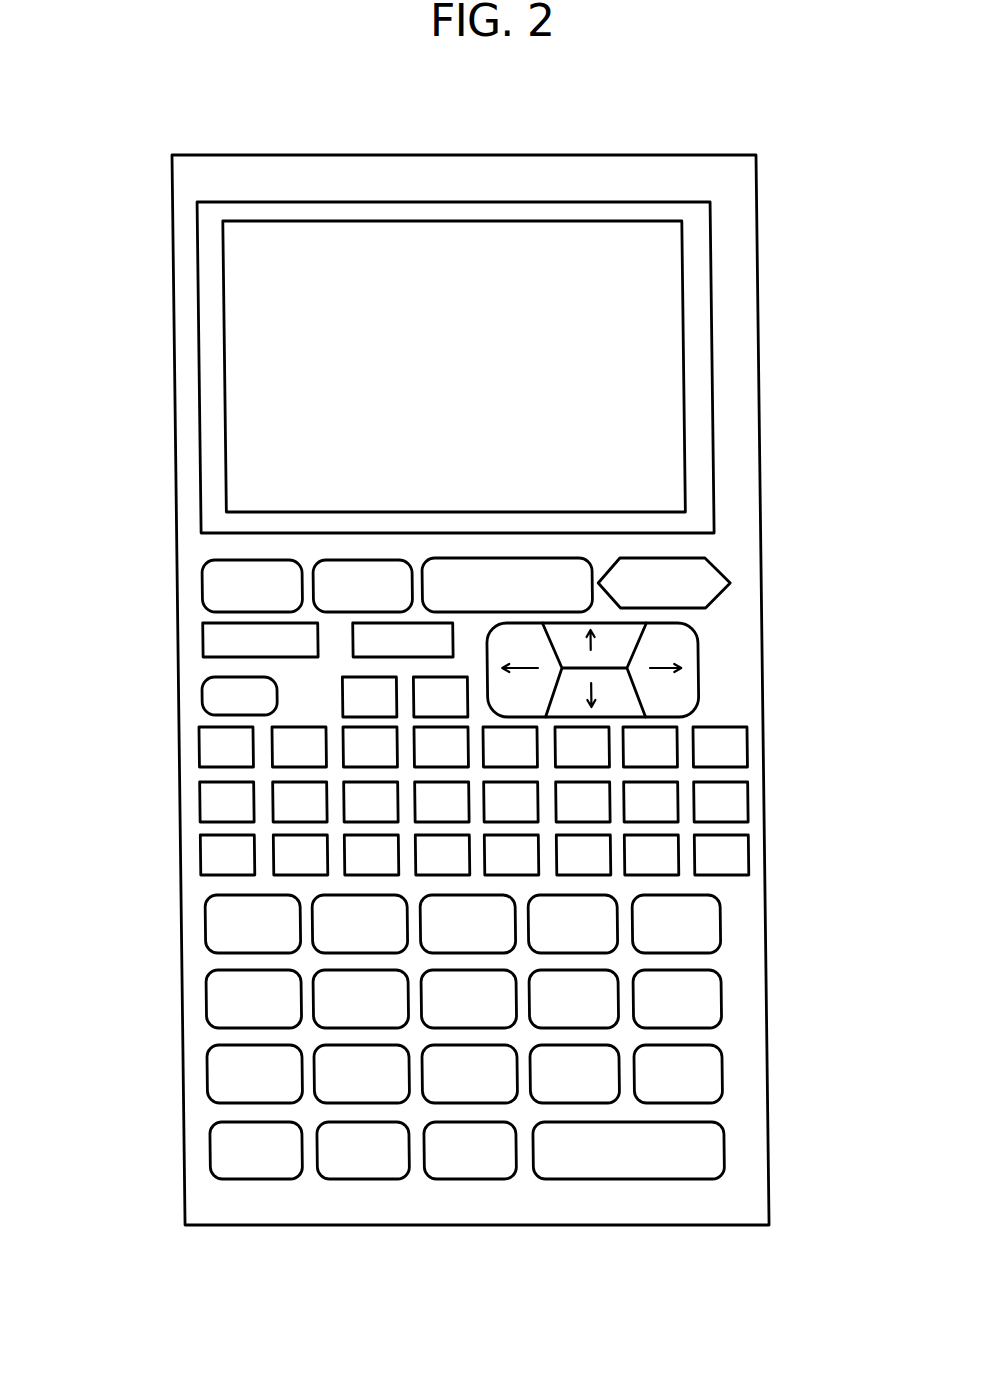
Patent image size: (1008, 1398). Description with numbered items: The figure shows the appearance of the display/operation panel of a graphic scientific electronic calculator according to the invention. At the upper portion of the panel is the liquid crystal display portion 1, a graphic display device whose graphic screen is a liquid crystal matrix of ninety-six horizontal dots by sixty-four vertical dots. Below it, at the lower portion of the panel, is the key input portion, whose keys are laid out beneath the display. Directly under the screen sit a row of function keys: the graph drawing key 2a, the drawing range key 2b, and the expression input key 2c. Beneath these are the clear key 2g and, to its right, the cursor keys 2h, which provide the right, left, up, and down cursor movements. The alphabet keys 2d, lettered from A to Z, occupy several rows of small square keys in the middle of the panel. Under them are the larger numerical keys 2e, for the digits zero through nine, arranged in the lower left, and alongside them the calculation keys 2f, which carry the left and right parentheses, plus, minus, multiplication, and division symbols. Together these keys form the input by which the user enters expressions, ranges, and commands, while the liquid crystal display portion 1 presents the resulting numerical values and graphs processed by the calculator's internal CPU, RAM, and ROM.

The liquid crystal display portion 1 is at (648, 278).
The graph drawing key 2a is at (196, 585).
The drawing range key 2b is at (355, 559).
The expression input key 2c is at (502, 567).
The alphabet keys 2d is at (740, 858).
The numerical keys 2e is at (197, 922).
The calculation keys 2f is at (711, 1008).
The clear key 2g is at (194, 684).
The cursor keys 2h is at (690, 660).